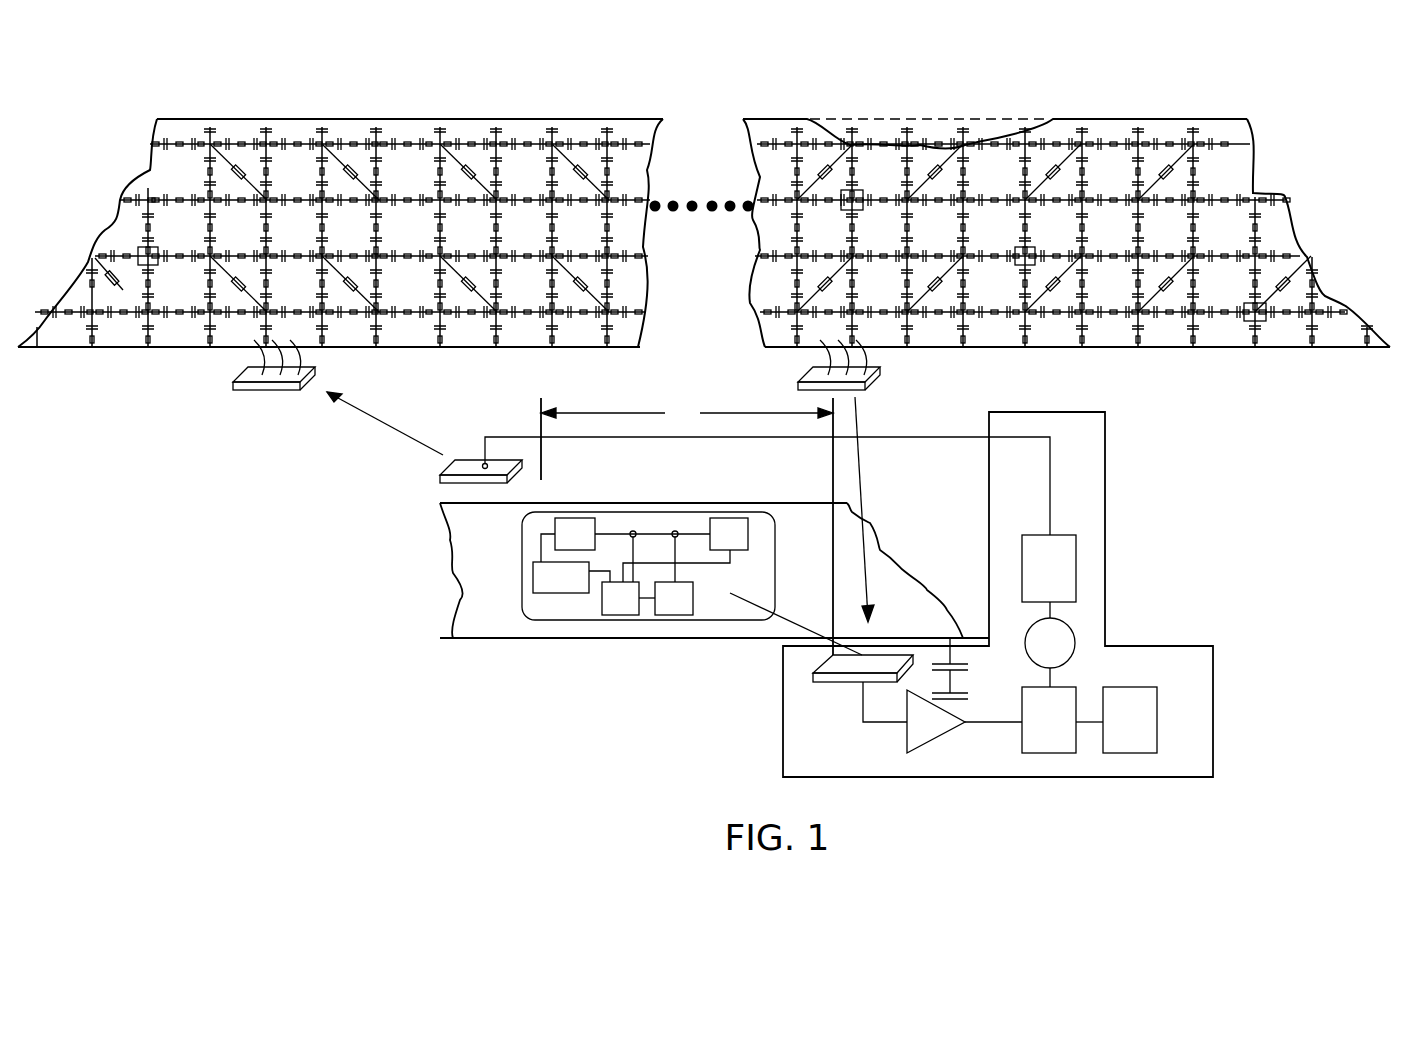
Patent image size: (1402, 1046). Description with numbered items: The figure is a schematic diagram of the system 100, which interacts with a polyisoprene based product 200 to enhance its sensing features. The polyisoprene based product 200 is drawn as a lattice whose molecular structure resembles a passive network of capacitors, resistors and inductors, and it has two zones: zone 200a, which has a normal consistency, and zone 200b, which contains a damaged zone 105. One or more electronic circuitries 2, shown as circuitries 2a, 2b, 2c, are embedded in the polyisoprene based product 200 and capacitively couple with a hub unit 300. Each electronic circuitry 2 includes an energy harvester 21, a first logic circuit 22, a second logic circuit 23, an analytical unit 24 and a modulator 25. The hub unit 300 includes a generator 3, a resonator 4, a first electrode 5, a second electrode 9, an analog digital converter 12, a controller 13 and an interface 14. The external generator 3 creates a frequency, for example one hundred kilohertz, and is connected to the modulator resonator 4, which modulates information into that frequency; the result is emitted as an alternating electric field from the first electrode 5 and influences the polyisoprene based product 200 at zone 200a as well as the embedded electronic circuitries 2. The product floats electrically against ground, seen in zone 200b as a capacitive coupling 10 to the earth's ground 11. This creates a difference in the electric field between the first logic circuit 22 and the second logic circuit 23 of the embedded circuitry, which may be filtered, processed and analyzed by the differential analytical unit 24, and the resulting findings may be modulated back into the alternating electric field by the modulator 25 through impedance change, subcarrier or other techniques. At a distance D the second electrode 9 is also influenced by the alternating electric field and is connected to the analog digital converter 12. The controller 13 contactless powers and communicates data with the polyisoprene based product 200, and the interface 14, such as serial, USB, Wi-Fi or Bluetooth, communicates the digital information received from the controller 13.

The system 100 is at (693, 694).
The polyisoprene based product 200 is at (1062, 327).
The zone of normal consistency 200a is at (283, 128).
The zone with damaged zone 200b is at (1112, 124).
The damaged zone 105 is at (906, 130).
The electronic circuitry 2 is at (143, 252).
The electronic circuitry 2a is at (843, 203).
The electronic circuitry 2b is at (1020, 268).
The electronic circuitry 2c is at (1262, 323).
The first electrode 5 is at (465, 460).
The energy harvester 21 is at (568, 540).
The first logic circuit 22 is at (571, 577).
The second logic circuit 23 is at (685, 550).
The analytical unit 24 is at (628, 598).
The modulator 25 is at (674, 598).
The hub unit 300 is at (1162, 554).
The second electrode 9 is at (830, 680).
The capacitive coupling 10 is at (962, 667).
The earth's ground 11 is at (968, 702).
The analog digital converter 12 is at (910, 732).
The resonator 4 is at (1066, 540).
The generator 3 is at (1058, 630).
The controller 13 is at (1025, 702).
The interface 14 is at (1152, 705).